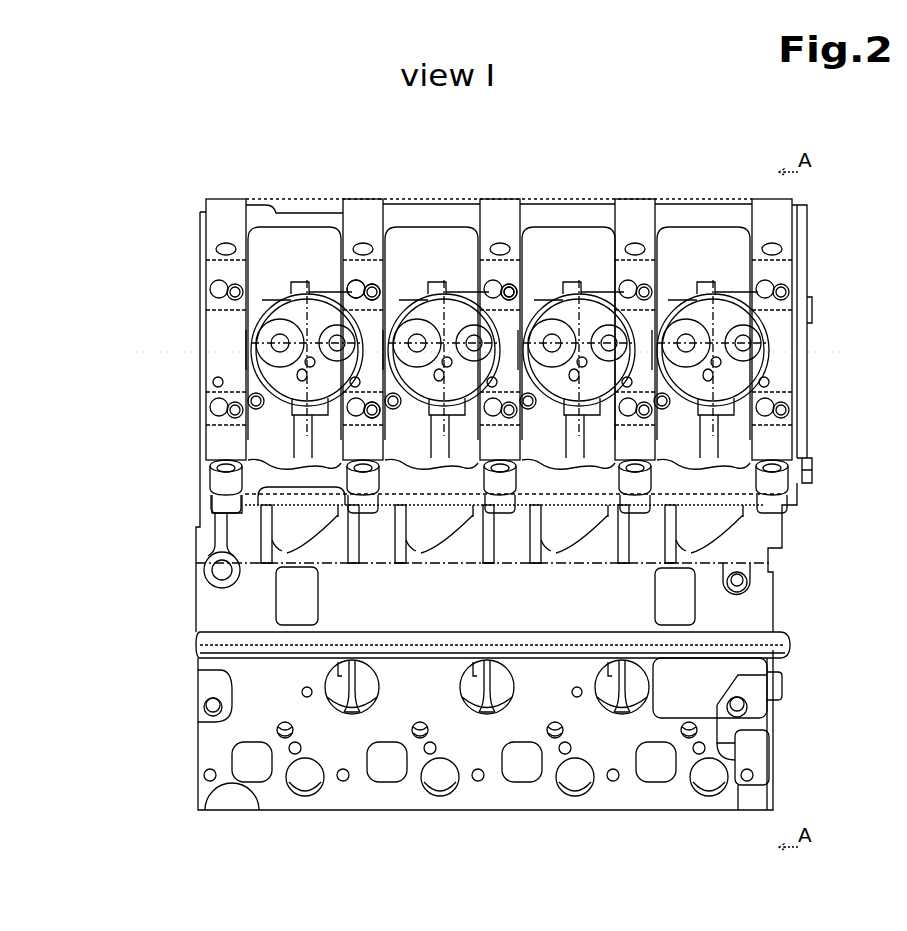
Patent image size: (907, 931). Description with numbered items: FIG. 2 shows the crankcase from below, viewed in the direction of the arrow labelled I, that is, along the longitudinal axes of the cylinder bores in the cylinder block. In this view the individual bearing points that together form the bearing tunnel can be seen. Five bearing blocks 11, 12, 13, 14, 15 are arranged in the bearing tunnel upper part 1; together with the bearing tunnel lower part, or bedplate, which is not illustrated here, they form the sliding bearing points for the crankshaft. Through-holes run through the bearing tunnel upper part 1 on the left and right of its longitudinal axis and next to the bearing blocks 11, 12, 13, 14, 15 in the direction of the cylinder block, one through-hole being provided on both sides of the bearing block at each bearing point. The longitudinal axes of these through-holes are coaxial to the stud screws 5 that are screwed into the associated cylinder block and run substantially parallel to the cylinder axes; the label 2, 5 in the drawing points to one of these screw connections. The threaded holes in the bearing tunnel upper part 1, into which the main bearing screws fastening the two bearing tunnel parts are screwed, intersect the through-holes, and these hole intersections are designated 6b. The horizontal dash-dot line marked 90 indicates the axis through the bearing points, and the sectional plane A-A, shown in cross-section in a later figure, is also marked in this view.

The bearing tunnel upper part 1 is at (630, 267).
The fastening bolt 2 is at (561, 216).
The stud screws 5 is at (507, 296).
The hole intersections 6b is at (357, 287).
The bearing block 11 is at (225, 325).
The bearing block 12 is at (372, 323).
The bearing block 13 is at (500, 327).
The bearing block 14 is at (635, 328).
The bearing block 15 is at (767, 327).
The crankshaft axis 90 is at (511, 353).